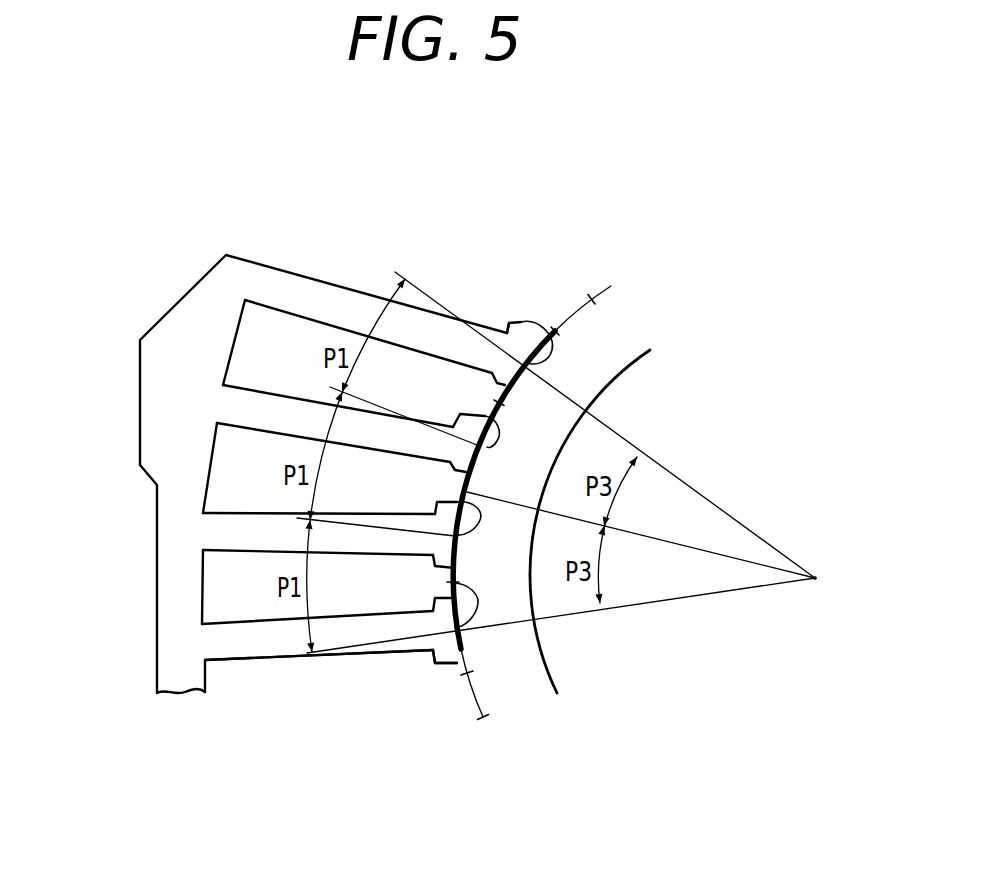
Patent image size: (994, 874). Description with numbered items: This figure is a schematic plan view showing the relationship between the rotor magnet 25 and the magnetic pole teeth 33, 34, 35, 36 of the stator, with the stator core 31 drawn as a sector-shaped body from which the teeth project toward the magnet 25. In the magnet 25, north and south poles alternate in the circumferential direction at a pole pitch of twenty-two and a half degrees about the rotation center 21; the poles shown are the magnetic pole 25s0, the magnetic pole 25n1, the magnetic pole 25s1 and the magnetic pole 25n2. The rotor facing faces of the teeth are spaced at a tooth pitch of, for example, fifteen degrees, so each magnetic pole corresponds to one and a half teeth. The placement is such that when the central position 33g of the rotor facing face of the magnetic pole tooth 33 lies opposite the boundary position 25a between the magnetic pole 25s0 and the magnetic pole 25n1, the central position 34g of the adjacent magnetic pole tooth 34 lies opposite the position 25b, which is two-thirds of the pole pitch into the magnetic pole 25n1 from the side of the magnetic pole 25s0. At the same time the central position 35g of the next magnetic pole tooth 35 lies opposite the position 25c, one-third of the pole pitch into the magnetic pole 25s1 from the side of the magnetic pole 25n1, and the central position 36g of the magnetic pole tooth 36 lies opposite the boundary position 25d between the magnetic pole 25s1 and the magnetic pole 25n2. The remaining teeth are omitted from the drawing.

The rotation center 21 is at (816, 577).
The magnet 25 is at (528, 738).
The boundary position 25a is at (548, 338).
The position 25b is at (478, 415).
The position 25c is at (456, 501).
The boundary position 25d is at (450, 583).
The magnetic pole 25s0 is at (596, 379).
The magnetic pole 25n1 is at (553, 432).
The magnetic pole 25s1 is at (519, 597).
The magnetic pole 25n2 is at (543, 690).
The stator core 31 is at (170, 323).
The magnetic pole tooth 33 is at (325, 297).
The central position 33g is at (510, 333).
The magnetic pole tooth 34 is at (268, 408).
The central position 34g is at (460, 425).
The magnetic pole tooth 35 is at (238, 526).
The central position 35g is at (450, 534).
The magnetic pole tooth 36 is at (244, 633).
The central position 36g is at (452, 626).